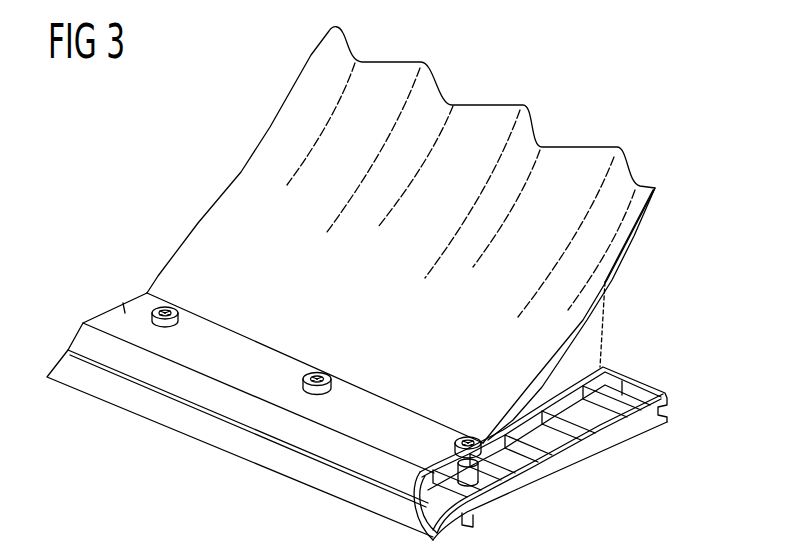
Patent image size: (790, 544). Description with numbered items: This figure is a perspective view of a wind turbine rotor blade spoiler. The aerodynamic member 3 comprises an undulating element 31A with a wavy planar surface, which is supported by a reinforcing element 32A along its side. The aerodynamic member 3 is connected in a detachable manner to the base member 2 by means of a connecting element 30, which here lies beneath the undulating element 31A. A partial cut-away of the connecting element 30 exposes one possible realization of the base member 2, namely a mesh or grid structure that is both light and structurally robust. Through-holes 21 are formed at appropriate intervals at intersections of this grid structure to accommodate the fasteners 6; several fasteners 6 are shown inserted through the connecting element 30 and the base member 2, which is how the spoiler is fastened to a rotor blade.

The aerodynamic member 3 is at (672, 228).
The undulating element 31A is at (487, 110).
The reinforcing element 32A is at (605, 335).
The connecting element 30 is at (290, 432).
The base member 2 is at (560, 455).
The through-hole 21 is at (490, 484).
The fastener 6 is at (175, 328).